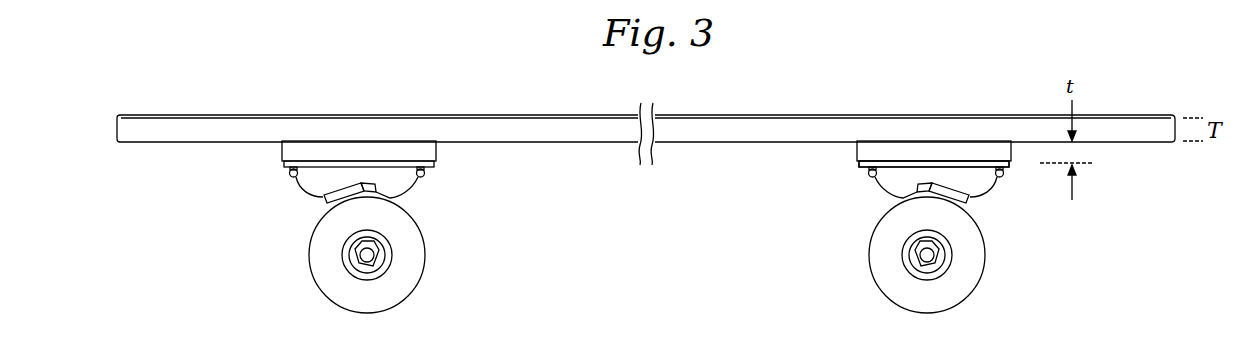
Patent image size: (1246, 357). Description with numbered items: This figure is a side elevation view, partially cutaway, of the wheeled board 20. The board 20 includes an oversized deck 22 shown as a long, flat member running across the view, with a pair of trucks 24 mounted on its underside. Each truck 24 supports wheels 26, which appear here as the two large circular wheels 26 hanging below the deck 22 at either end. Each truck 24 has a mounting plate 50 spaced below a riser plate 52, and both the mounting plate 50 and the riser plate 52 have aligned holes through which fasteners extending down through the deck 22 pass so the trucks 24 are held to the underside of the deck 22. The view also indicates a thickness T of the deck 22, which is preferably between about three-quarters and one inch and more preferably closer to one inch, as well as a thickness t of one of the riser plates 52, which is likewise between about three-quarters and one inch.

The wheeled board 20 is at (641, 159).
The deck 22 is at (141, 150).
The truck 24 is at (408, 190).
The wheel 26 is at (422, 270).
The mounting plate 50 is at (973, 170).
The riser plate 52 is at (858, 152).